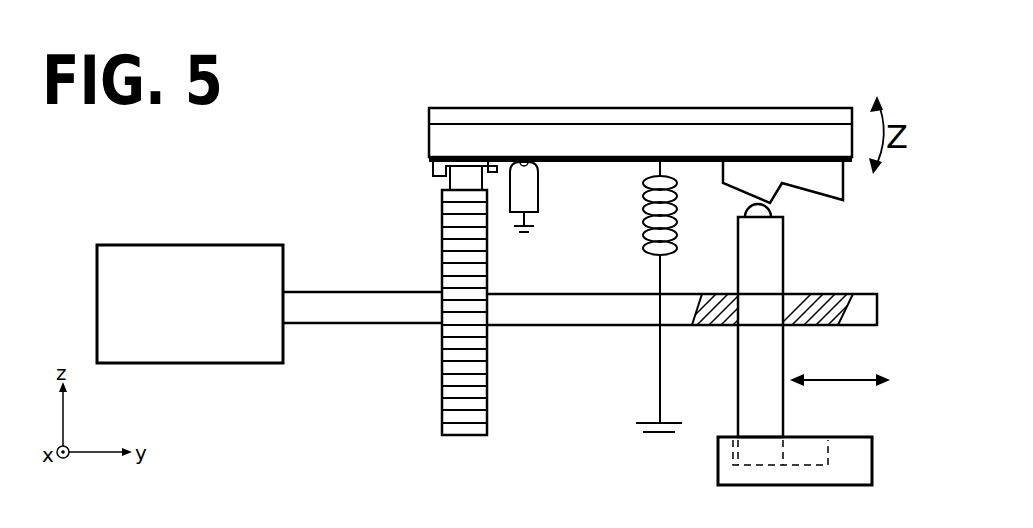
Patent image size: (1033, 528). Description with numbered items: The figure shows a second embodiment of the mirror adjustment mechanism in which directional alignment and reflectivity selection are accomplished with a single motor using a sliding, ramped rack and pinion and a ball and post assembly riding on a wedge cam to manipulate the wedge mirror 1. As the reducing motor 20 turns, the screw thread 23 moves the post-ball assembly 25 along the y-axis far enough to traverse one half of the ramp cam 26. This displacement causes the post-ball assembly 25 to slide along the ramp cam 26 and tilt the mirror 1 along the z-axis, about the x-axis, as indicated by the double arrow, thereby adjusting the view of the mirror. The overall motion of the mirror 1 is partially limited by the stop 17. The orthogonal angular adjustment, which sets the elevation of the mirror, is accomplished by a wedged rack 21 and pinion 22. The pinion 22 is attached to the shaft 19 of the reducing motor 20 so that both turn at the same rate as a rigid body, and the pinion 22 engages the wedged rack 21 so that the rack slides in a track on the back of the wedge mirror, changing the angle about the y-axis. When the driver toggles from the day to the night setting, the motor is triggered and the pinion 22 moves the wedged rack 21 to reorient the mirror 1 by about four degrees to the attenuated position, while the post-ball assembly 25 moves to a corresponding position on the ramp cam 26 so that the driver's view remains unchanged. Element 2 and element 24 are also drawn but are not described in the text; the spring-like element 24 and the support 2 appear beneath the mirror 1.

The mirror 1 is at (690, 108).
The support member 2 is at (705, 163).
The stop 17 is at (538, 187).
The shaft 19 is at (332, 325).
The reducing motor 20 is at (125, 363).
The wedged rack 21 is at (436, 178).
The pinion 22 is at (460, 436).
The screw thread 23 is at (582, 325).
The spring 24 is at (647, 255).
The post-ball assembly 25 is at (785, 253).
The ramp cam 26 is at (843, 200).